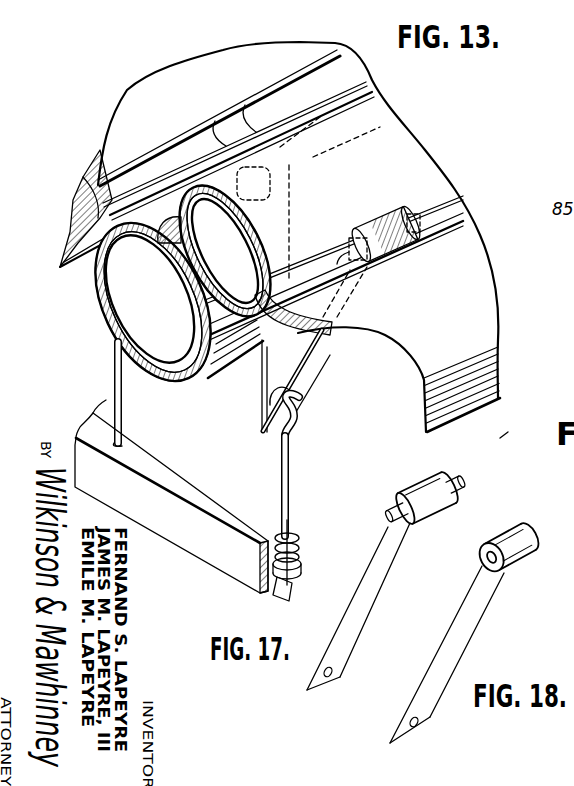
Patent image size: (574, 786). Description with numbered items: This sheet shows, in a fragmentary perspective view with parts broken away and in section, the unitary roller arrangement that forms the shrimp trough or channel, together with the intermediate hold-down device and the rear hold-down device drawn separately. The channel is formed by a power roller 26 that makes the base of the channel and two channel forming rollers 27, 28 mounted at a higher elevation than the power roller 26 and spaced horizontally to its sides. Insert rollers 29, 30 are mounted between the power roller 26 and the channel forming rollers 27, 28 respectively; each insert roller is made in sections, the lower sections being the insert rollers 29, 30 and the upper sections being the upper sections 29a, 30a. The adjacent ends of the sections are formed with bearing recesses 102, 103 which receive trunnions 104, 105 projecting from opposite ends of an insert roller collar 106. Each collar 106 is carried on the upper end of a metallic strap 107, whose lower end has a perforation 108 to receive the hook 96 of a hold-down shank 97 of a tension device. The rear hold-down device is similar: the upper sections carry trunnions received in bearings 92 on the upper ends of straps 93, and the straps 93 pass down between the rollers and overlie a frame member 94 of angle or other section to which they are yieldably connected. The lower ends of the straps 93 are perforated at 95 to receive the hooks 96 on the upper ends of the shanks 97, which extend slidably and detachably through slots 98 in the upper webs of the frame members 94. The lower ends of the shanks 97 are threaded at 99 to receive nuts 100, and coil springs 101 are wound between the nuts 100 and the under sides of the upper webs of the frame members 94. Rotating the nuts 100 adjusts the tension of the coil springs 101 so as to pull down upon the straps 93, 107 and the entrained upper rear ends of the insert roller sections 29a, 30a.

In FIG. 13, the power roller 26 is at (121, 287).
In FIG. 13, the channel forming roller 27 is at (98, 194).
In FIG. 13, the channel forming roller 28 is at (199, 250).
In FIG. 13, the insert roller 29 is at (145, 180).
In FIG. 13, the upper section of insert roller 29a is at (290, 101).
In FIG. 13, the insert roller 30 is at (160, 260).
In FIG. 13, the upper section of insert roller 30a is at (438, 203).
In FIG. 18, the bearing 92 is at (527, 530).
In FIG. 18, the strap 93 is at (463, 612).
In FIG. 13, the frame member 94 is at (220, 553).
In FIG. 18, the perforation 95 is at (413, 727).
In FIG. 13, the hook 96 is at (301, 426).
In FIG. 13, the shank 97 is at (113, 367).
In FIG. 13, the slot 98 is at (127, 434).
In FIG. 13, the threaded end 99 is at (292, 592).
In FIG. 13, the nut 100 is at (304, 570).
In FIG. 13, the coil spring 101 is at (301, 550).
In FIG. 13, the bearing recess 102 is at (354, 250).
In FIG. 13, the bearing recess 103 is at (430, 241).
In FIG. 17, the trunnion 104 is at (388, 507).
In FIG. 17, the trunnion 105 is at (463, 473).
In FIG. 13, the insert roller collar 106 is at (223, 130).
In FIG. 17, the insert roller collar 106 is at (433, 497).
In FIG. 13, the strap 107 is at (330, 347).
In FIG. 17, the strap 107 is at (361, 630).
In FIG. 13, the perforation 108 is at (274, 363).
In FIG. 17, the perforation 108 is at (329, 677).